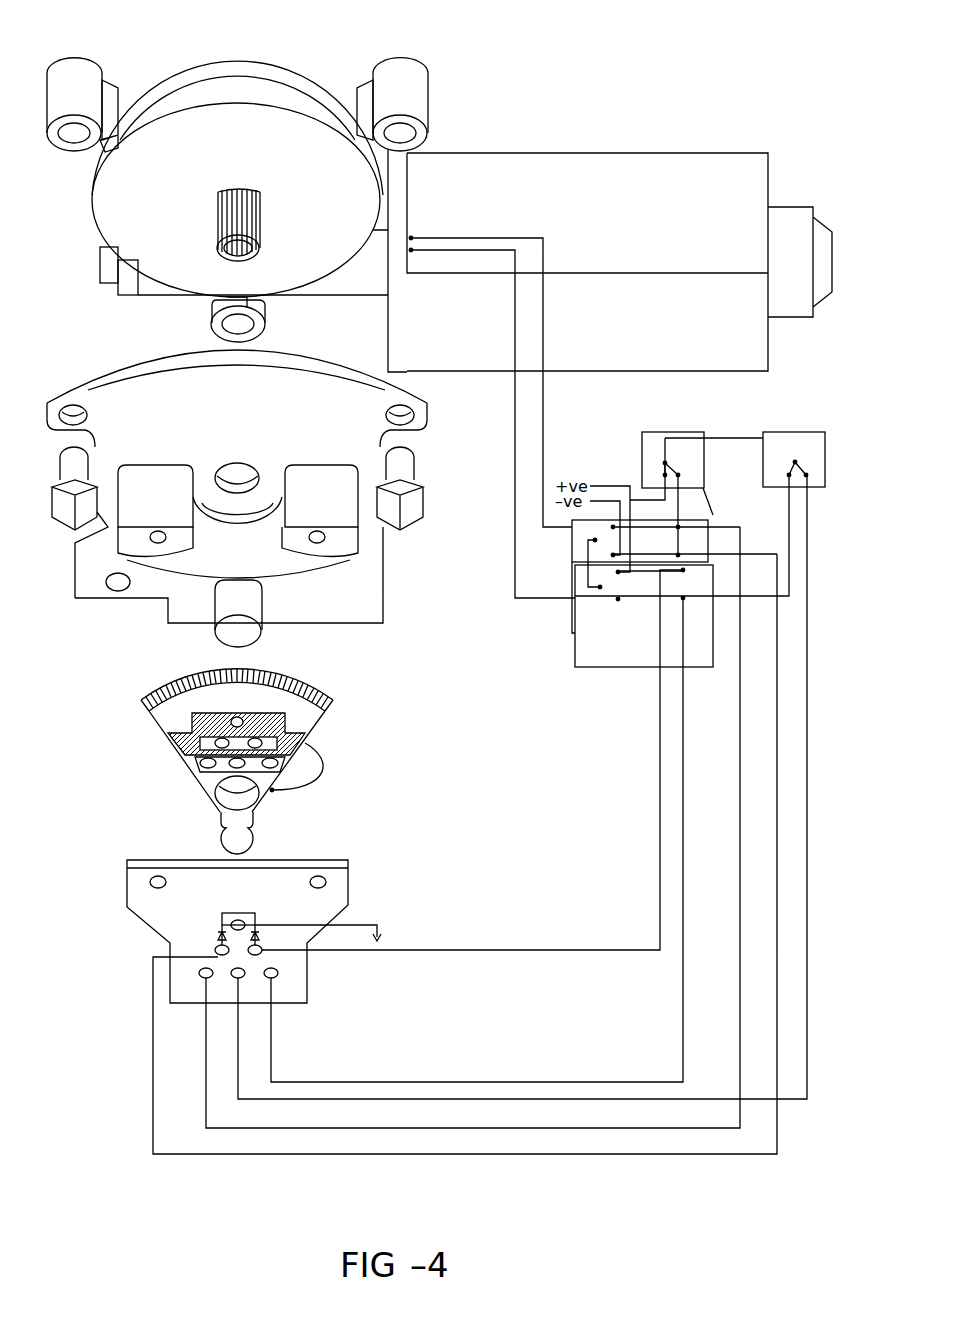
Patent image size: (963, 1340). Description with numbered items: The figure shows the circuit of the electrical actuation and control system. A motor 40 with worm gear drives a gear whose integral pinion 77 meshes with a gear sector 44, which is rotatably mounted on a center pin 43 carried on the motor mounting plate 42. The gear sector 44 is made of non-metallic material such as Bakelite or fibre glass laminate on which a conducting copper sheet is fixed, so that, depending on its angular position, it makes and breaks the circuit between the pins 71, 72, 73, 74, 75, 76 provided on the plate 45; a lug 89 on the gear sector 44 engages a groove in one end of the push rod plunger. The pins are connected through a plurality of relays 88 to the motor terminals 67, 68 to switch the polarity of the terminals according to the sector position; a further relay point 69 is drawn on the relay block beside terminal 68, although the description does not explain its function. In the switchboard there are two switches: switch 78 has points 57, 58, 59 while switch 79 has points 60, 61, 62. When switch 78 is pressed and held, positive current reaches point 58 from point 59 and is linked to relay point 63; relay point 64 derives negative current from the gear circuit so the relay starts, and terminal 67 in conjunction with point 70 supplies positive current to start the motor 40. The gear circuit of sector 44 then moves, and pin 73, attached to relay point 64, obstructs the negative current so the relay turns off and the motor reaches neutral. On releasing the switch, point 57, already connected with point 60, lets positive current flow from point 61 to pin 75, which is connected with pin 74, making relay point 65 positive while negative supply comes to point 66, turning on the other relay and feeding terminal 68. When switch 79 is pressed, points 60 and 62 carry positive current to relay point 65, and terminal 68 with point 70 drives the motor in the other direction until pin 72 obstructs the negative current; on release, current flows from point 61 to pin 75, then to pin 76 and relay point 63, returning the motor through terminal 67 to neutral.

The motor 40 is at (92, 197).
The pinion 77 is at (227, 260).
The motor mounting plate 42 is at (75, 598).
The center pin 43 is at (238, 630).
The gear sector 44 is at (185, 752).
The lug 89 is at (220, 836).
The plate 45 is at (128, 883).
The pin 71 is at (223, 913).
The pin 72 is at (215, 949).
The pin 73 is at (261, 952).
The pin 74 is at (199, 972).
The pin 75 is at (232, 975).
The pin 76 is at (265, 975).
The switch point 57 is at (665, 463).
The switch point 58 is at (678, 475).
The switch point 59 is at (665, 475).
The switch 78 is at (748, 517).
The switch point 60 is at (795, 462).
The switch point 61 is at (807, 475).
The switch point 62 is at (795, 462).
The switch 79 is at (817, 487).
The motor terminal 68 is at (613, 527).
The relay contact 69 is at (595, 540).
The point 70 is at (600, 587).
The relays 88 is at (618, 572).
The motor terminal 67 is at (622, 572).
The relay point 66 is at (678, 527).
The relay point 65 is at (678, 555).
The relay point 64 is at (683, 570).
The relay point 63 is at (683, 598).